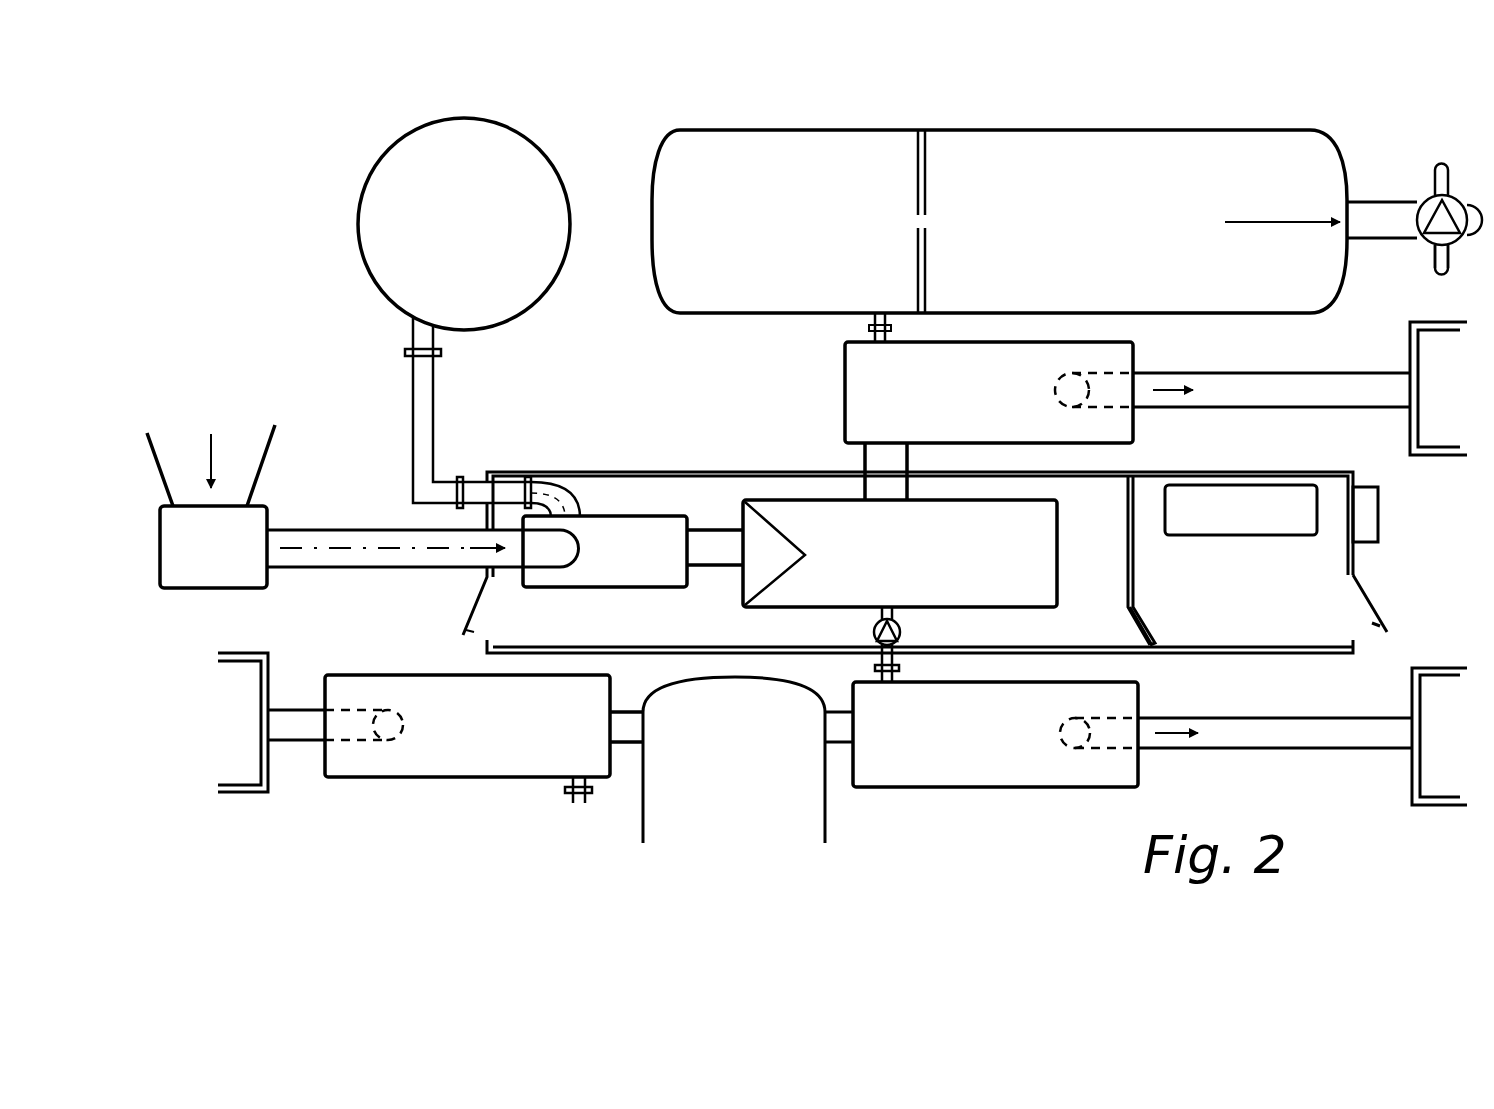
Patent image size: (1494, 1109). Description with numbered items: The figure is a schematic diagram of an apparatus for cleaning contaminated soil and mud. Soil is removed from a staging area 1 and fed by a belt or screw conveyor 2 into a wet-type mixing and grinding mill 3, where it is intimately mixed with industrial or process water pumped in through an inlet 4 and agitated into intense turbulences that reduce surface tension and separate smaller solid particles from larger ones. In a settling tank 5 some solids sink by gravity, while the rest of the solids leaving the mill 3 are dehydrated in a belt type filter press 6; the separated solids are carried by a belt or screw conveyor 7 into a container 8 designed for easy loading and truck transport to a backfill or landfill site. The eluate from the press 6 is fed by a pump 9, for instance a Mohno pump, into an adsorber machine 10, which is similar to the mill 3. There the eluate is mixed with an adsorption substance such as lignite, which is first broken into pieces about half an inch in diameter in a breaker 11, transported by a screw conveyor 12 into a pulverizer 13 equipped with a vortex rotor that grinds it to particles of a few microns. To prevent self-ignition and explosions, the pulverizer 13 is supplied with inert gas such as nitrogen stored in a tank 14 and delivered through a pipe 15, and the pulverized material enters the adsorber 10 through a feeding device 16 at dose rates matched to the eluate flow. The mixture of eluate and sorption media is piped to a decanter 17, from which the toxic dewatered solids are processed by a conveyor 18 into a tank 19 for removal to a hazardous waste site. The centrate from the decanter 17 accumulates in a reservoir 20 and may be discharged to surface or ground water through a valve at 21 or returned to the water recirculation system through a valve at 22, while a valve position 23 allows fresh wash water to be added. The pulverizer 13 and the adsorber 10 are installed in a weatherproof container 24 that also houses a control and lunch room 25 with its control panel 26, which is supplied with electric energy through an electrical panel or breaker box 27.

The staging area 1 is at (243, 722).
The belt or screw conveyor 2 is at (296, 724).
The wet-type mixing and grinding mill 3 is at (484, 726).
The inlet 4 is at (578, 808).
The settling tank 5 is at (748, 760).
The belt type filter press 6 is at (995, 734).
The belt or screw conveyor 7 is at (1275, 734).
The container 8 is at (1439, 736).
The pump 9 is at (897, 644).
The adsorber machine 10 is at (900, 553).
The breaker 11 is at (211, 506).
The conveyor 12 is at (423, 548).
The pulverizer 13 is at (633, 551).
The tank 14 is at (464, 224).
The pipe 15 is at (492, 417).
The feeding device 16 is at (775, 553).
The decanter 17 is at (989, 421).
The conveyor 18 is at (1271, 390).
The tank 19 is at (1438, 388).
The reservoir 20 is at (1034, 236).
The valve 21 is at (1455, 206).
The valve 22 is at (1450, 274).
The valve position 23 is at (1420, 201).
The weatherproof container 24 is at (1117, 560).
The control and lunch room 25 is at (1153, 610).
The control panel 26 is at (1241, 510).
The electrical panel or breaker box 27 is at (1383, 505).